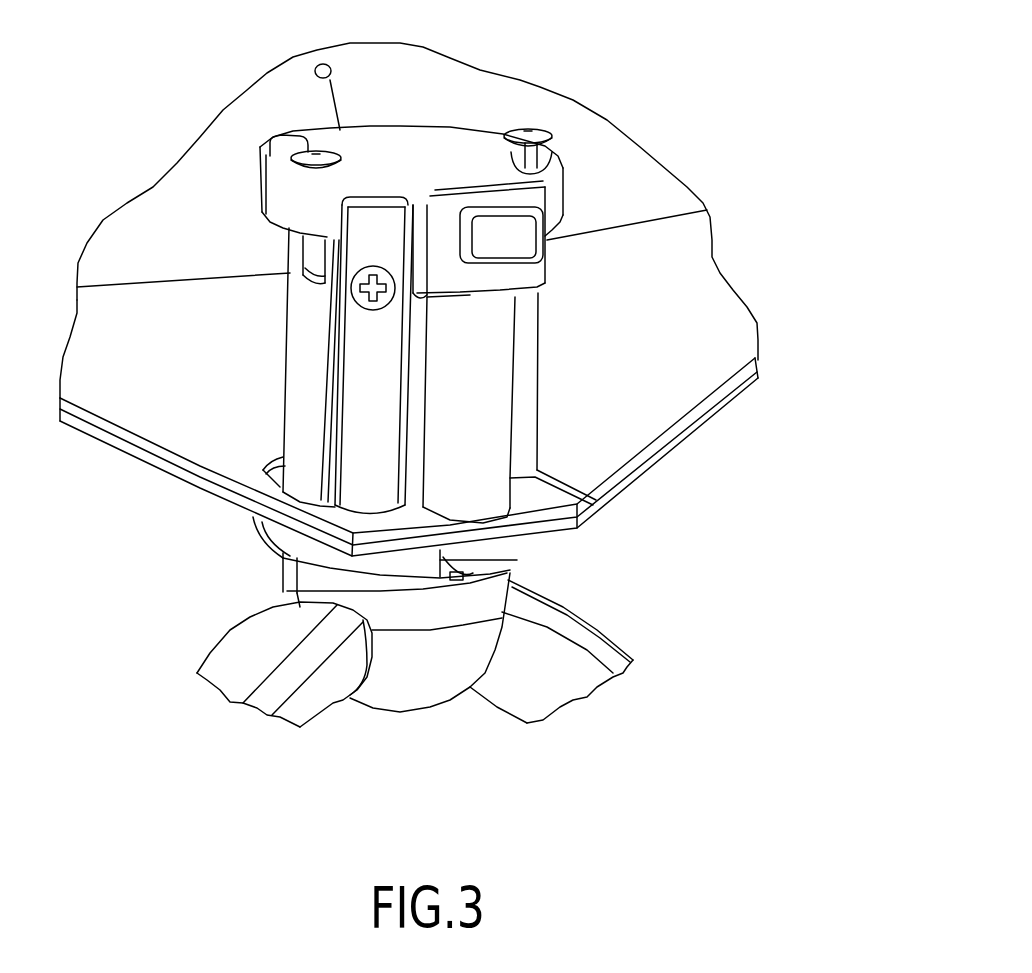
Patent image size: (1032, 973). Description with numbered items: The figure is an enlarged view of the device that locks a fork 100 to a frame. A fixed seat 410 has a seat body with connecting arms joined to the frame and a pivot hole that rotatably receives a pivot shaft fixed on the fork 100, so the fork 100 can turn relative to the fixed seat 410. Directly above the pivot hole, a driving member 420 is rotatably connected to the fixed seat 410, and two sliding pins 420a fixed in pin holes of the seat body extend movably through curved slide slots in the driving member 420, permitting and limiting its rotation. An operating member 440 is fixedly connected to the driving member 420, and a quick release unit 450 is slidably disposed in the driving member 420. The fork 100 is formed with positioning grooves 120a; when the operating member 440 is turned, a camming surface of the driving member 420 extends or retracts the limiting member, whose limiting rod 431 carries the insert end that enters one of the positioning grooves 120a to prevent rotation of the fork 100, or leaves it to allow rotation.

The fork 100 is at (537, 683).
The positioning groove 120a is at (453, 577).
The fixed seat 410 is at (463, 463).
The driving member 420 is at (495, 181).
The sliding pin 420a is at (335, 156).
The limiting rod 431 is at (470, 557).
The operating member 440 is at (377, 366).
The quick release unit 450 is at (523, 250).